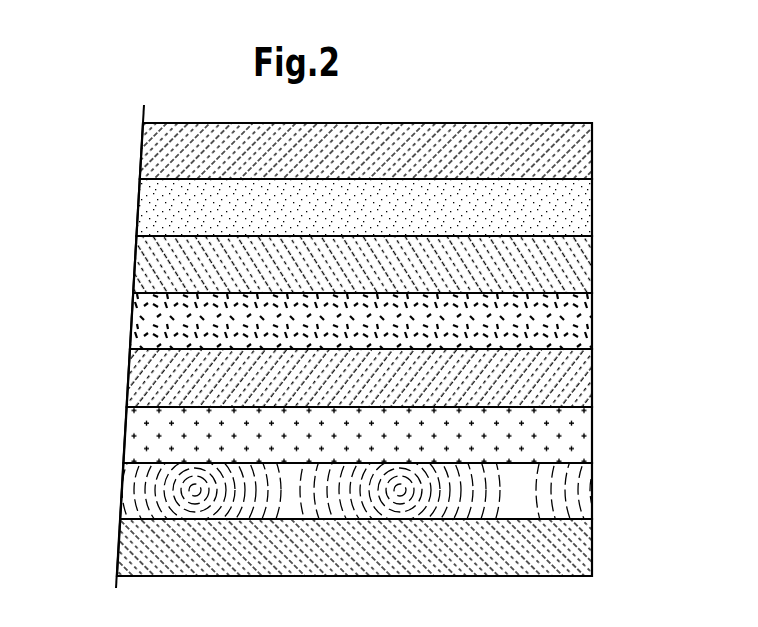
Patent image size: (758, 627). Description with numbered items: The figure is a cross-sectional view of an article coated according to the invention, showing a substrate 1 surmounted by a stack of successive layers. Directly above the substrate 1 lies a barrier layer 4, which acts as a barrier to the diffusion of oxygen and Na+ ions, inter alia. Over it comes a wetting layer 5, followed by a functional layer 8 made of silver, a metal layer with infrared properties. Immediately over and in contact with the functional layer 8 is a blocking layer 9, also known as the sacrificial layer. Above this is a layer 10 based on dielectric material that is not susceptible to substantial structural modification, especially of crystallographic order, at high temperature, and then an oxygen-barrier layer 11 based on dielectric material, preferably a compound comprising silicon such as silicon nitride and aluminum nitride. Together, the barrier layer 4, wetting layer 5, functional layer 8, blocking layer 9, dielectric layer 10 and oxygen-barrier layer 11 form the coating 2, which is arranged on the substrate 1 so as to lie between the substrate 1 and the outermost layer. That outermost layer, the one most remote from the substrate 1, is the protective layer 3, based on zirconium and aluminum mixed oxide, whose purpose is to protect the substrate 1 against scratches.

The substrate 1 is at (592, 542).
The coating 2 is at (395, 391).
The protective layer 3 is at (592, 144).
The barrier layer 4 is at (592, 484).
The wetting layer 5 is at (592, 432).
The functional layer 8 is at (592, 377).
The blocking layer 9 is at (592, 317).
The layer of dielectric material 10 is at (592, 261).
The oxygen-barrier layer 11 is at (592, 204).